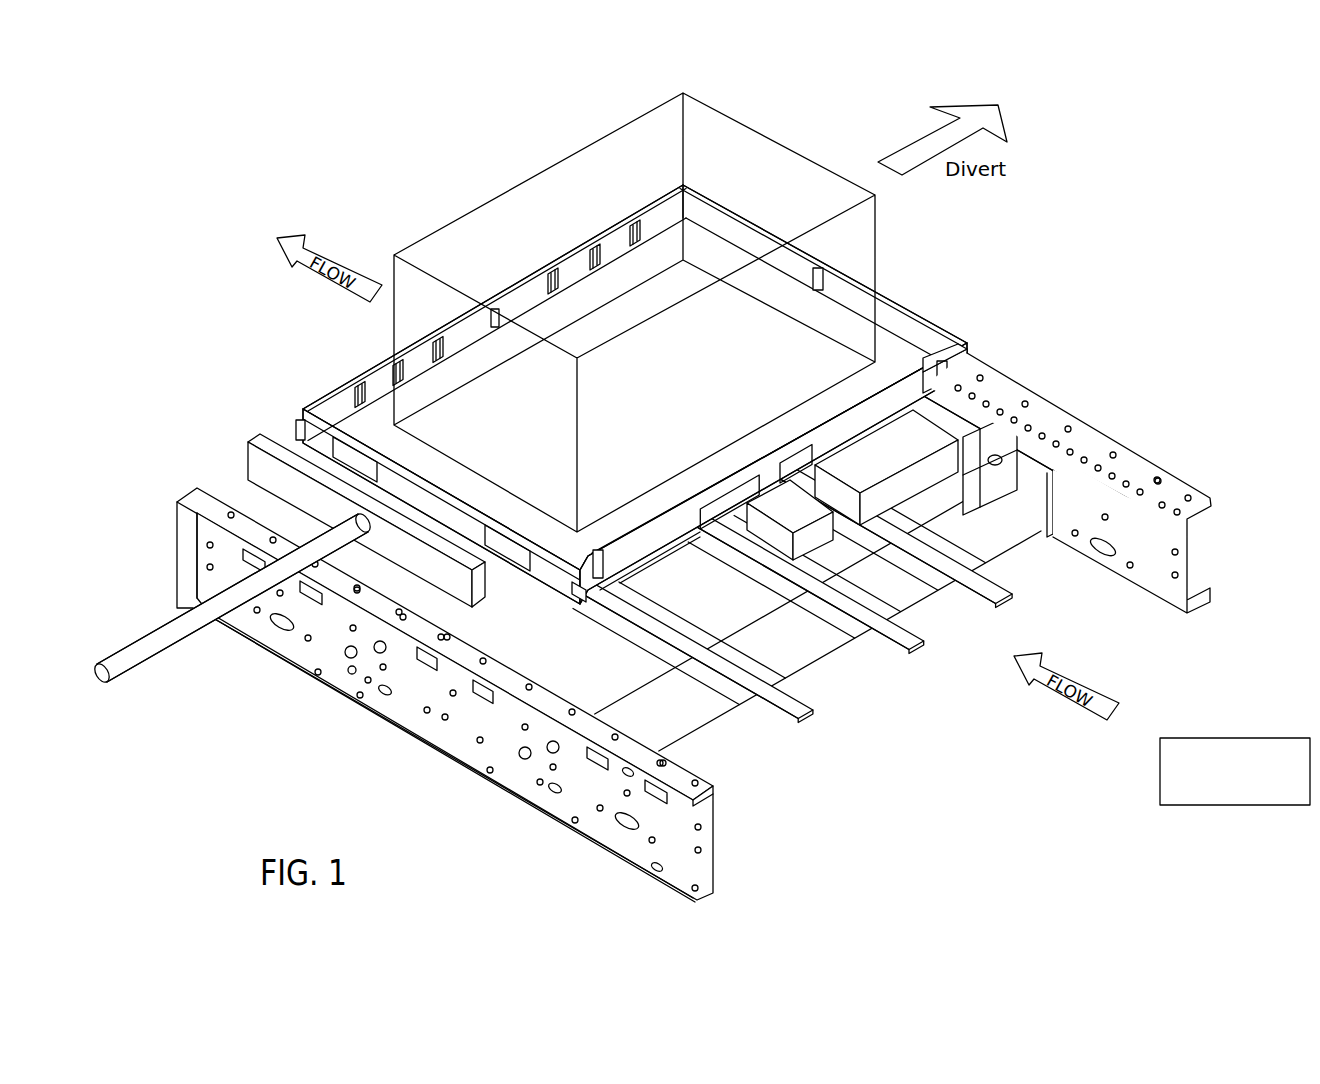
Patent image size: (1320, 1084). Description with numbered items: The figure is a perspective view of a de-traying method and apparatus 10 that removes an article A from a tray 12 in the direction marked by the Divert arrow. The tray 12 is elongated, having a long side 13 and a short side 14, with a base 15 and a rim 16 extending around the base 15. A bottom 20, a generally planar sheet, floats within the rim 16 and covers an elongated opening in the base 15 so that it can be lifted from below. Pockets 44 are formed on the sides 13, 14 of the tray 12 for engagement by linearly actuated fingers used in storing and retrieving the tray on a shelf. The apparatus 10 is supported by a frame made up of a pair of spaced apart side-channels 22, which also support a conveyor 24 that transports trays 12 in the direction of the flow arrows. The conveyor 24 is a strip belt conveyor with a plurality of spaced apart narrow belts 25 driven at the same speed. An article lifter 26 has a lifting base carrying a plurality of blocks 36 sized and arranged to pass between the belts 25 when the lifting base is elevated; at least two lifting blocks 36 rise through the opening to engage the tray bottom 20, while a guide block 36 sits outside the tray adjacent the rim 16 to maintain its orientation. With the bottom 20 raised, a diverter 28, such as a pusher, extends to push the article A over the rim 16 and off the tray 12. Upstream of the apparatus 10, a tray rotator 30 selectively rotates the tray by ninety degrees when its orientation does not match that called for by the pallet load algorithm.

The de-traying method and apparatus 10 is at (1085, 262).
The tray 12 is at (610, 422).
The long side 13 is at (668, 540).
The short side 14 is at (852, 278).
The base 15 is at (907, 358).
The rim 16 is at (576, 598).
The bottom 20 is at (655, 413).
The article A is at (634, 312).
The side-channel 22 is at (1142, 453).
The conveyor 24 is at (903, 670).
The belt 25 is at (778, 718).
The article lifter 26 is at (960, 462).
The diverter 28 is at (258, 450).
The tray rotator 30 is at (1232, 806).
The block 36 is at (875, 498).
The pocket 44 is at (300, 428).